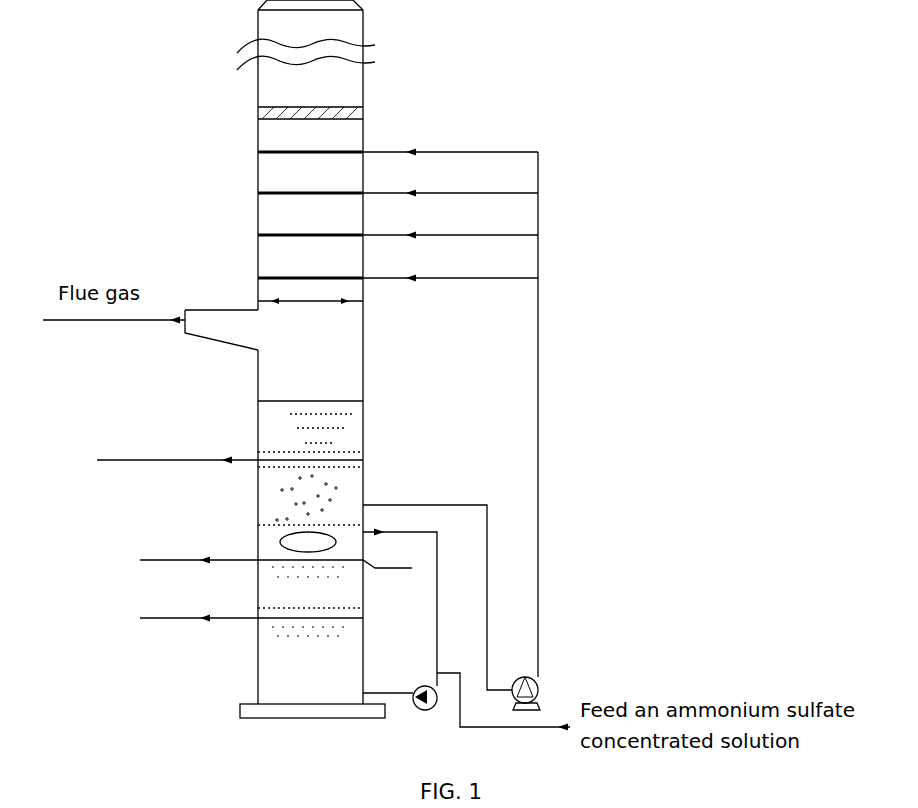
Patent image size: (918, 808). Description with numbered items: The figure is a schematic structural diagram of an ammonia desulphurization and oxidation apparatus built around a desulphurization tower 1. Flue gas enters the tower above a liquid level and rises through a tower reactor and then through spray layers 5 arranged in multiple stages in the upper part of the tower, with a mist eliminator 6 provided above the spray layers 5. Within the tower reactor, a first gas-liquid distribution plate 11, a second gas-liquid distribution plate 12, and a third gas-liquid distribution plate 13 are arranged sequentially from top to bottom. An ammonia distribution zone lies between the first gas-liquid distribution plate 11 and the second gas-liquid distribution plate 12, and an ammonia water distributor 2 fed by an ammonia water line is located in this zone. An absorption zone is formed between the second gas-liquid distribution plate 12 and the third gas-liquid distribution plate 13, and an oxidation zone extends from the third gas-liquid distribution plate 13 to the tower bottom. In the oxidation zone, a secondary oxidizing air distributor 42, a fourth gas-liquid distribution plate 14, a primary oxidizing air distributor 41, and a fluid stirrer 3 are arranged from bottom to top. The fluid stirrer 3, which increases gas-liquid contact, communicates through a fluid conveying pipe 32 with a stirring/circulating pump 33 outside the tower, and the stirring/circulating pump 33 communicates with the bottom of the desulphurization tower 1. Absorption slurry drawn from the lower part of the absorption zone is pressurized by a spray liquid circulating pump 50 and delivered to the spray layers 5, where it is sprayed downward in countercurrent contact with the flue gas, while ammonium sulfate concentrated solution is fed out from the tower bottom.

The desulphurization tower 1 is at (363, 350).
The ammonia water distributor 2 is at (363, 460).
The fluid stirrer 3 is at (283, 542).
The spray layer 5 is at (288, 278).
The mist eliminator 6 is at (330, 107).
The first gas-liquid distribution plate 11 is at (360, 450).
The second gas-liquid distribution plate 12 is at (363, 467).
The third gas-liquid distribution plate 13 is at (283, 527).
The fourth gas-liquid distribution plate 14 is at (363, 607).
The fluid conveying pipe 32 is at (436, 648).
The stirring/circulating pump 33 is at (430, 710).
The primary oxidizing air distributor 41 is at (276, 555).
The secondary oxidizing air distributor 42 is at (347, 618).
The spray liquid circulating pump 50 is at (538, 697).